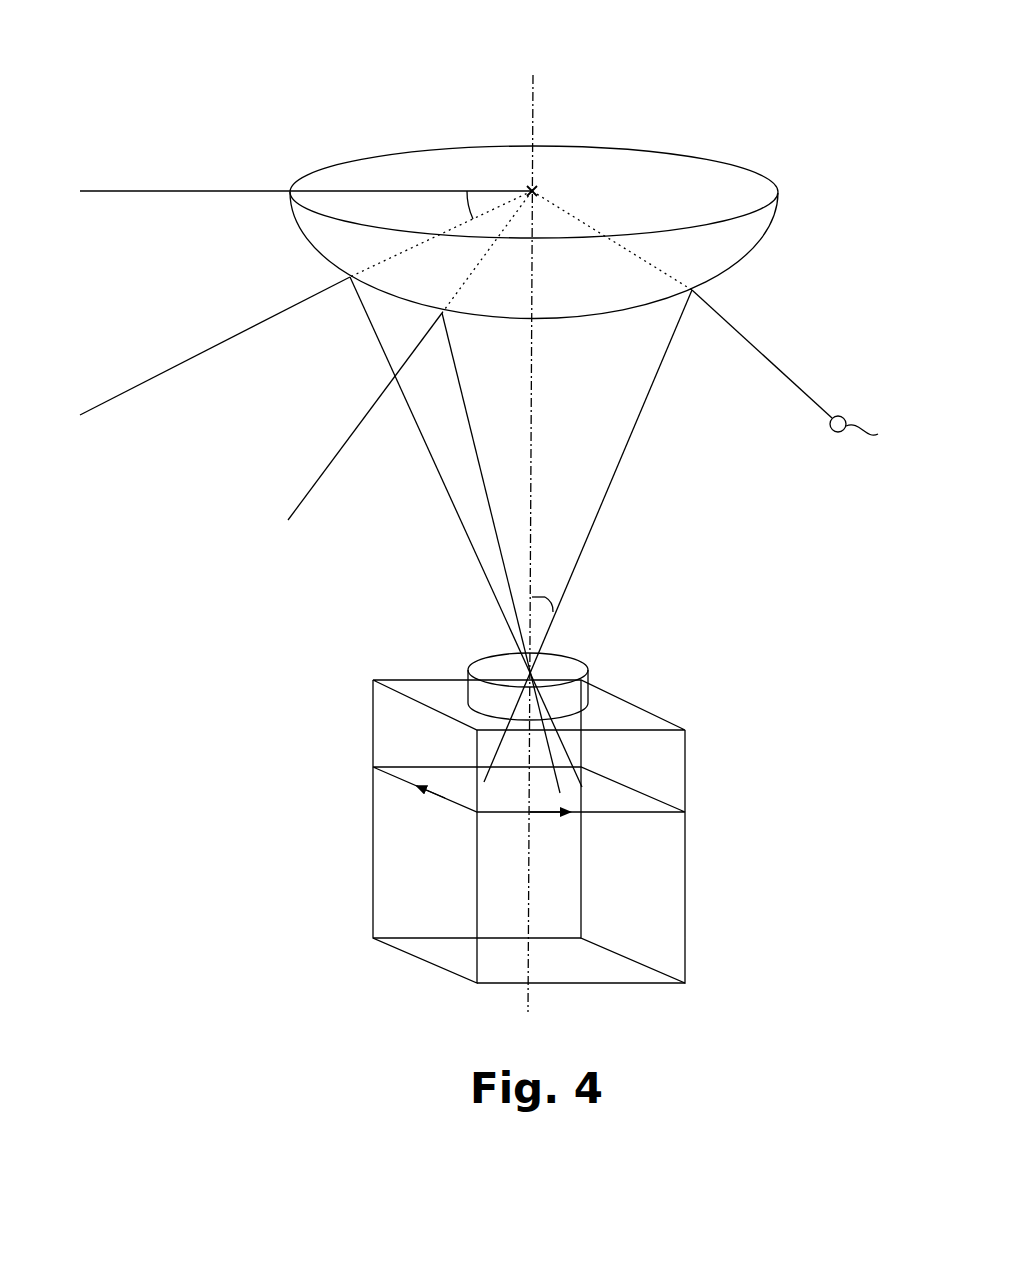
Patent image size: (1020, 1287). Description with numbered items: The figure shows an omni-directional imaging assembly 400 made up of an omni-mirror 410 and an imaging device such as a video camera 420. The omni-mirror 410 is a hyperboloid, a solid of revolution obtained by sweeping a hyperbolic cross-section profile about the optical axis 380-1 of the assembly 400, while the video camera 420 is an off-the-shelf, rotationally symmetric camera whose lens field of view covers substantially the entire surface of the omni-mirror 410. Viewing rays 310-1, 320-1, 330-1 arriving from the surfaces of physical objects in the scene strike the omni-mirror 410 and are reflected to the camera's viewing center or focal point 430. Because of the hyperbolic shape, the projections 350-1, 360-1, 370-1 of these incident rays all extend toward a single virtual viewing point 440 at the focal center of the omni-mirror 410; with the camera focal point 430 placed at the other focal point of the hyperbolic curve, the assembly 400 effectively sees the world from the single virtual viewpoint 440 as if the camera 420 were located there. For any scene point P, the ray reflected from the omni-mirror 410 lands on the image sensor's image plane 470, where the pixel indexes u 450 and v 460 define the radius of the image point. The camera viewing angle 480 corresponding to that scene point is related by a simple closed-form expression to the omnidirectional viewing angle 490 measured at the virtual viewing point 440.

The omni-directional imaging assembly 400 is at (288, 104).
The omni-mirror 410 is at (778, 194).
The video camera 420 is at (686, 858).
The focal point 430 is at (538, 680).
The virtual viewing point 440 is at (535, 188).
The pixel index u 450 is at (445, 800).
The pixel index v 460 is at (537, 814).
The image plane 470 is at (614, 780).
The camera viewing angle 480 is at (548, 594).
The omnidirectional viewing angle 490 is at (452, 204).
The viewing ray 310-1 is at (199, 359).
The viewing ray 320-1 is at (349, 433).
The viewing ray 330-1 is at (800, 388).
The projection 350-1 is at (378, 264).
The projection 360-1 is at (476, 266).
The projection 370-1 is at (653, 262).
The optical axis 380-1 is at (537, 345).